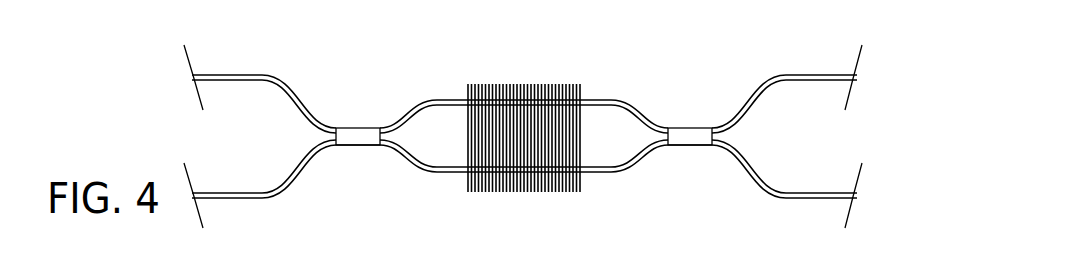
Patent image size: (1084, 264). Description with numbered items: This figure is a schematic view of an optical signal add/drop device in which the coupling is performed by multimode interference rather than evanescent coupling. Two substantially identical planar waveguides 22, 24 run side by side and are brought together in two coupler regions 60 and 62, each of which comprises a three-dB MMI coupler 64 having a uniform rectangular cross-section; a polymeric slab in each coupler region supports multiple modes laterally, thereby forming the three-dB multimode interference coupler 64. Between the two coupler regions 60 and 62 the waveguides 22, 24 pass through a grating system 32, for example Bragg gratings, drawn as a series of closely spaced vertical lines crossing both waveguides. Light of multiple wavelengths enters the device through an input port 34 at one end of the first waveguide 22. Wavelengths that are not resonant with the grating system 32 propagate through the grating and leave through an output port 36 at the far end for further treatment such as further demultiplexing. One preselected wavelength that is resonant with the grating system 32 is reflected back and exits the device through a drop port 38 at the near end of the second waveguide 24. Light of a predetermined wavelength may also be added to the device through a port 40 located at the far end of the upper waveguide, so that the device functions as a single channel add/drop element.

The planar waveguide 22 is at (300, 90).
The planar waveguide 24 is at (300, 180).
The grating system 32 is at (528, 75).
The input port 34 is at (193, 75).
The output port 36 is at (855, 193).
The drop port 38 is at (193, 193).
The port 40 is at (855, 75).
The coupler region 60 is at (358, 116).
The coupler region 62 is at (697, 116).
The 3-dB MMI coupler 64 is at (360, 146).